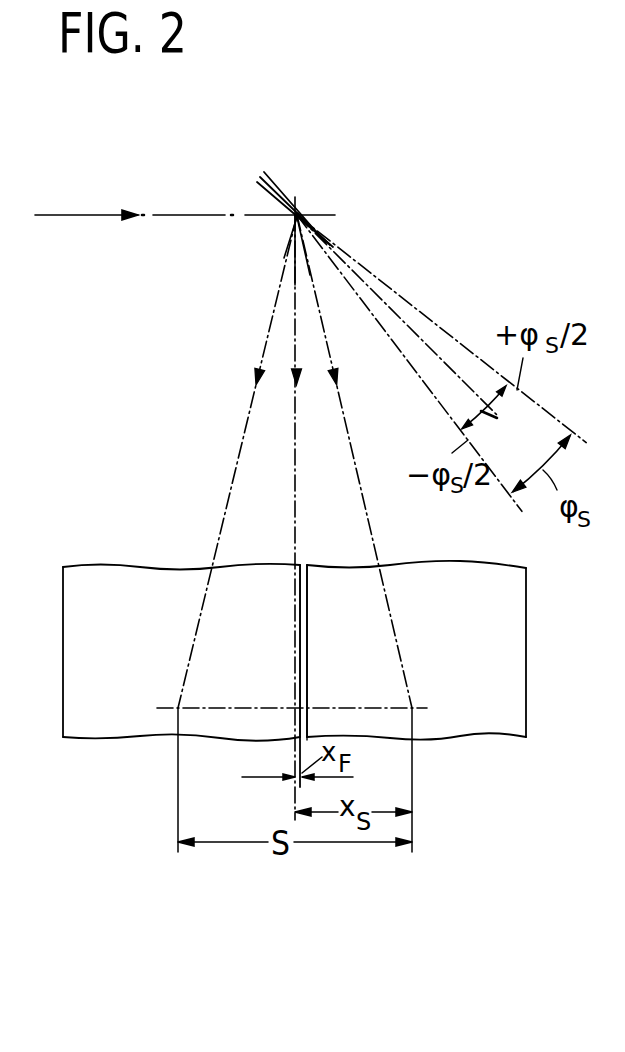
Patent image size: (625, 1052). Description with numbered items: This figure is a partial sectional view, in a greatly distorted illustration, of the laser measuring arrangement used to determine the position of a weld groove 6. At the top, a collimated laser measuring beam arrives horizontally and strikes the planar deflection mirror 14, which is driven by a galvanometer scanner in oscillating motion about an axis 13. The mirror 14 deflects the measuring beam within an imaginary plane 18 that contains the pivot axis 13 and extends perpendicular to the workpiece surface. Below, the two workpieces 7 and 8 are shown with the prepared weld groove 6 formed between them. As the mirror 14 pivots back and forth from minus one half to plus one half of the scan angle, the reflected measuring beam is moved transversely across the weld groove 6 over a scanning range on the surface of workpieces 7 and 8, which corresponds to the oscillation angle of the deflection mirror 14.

The deflection mirror 14 is at (275, 180).
The axis 13 is at (313, 232).
The imaginary plane 18 is at (293, 340).
The workpiece 8 is at (125, 587).
The workpiece 7 is at (482, 580).
The weld groove 6 is at (308, 660).